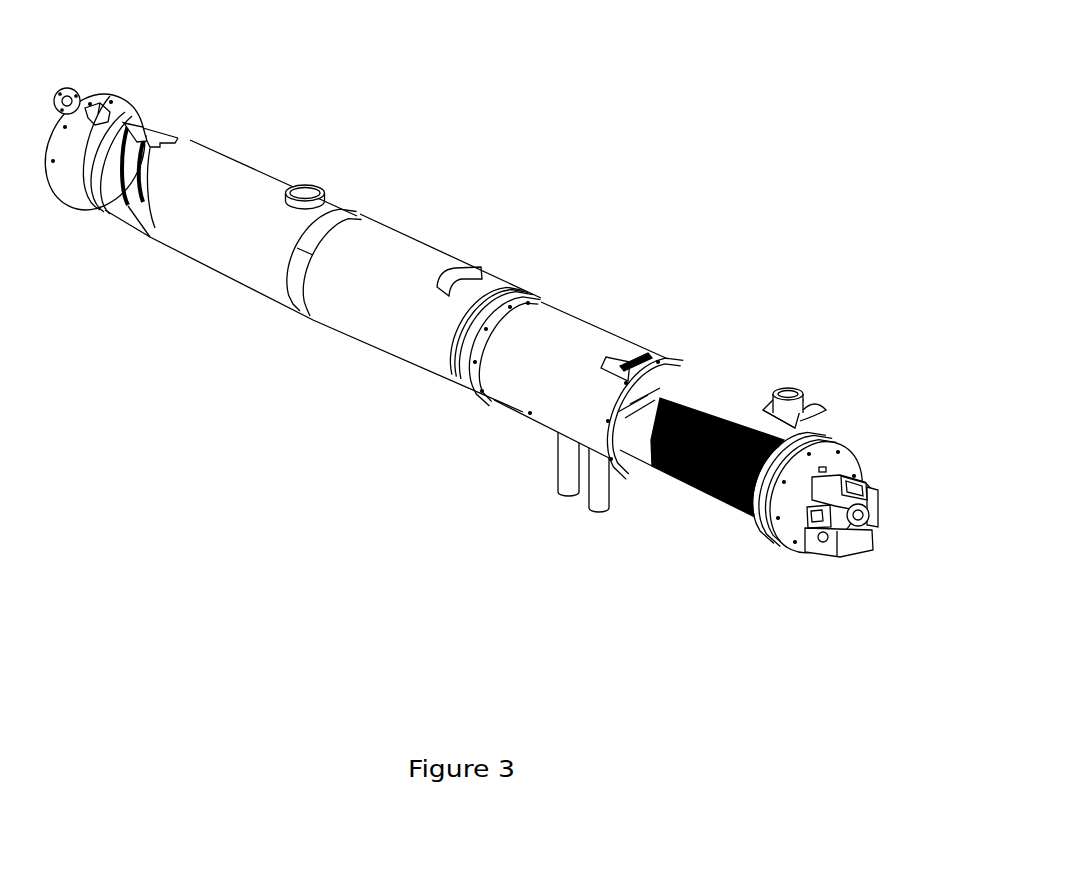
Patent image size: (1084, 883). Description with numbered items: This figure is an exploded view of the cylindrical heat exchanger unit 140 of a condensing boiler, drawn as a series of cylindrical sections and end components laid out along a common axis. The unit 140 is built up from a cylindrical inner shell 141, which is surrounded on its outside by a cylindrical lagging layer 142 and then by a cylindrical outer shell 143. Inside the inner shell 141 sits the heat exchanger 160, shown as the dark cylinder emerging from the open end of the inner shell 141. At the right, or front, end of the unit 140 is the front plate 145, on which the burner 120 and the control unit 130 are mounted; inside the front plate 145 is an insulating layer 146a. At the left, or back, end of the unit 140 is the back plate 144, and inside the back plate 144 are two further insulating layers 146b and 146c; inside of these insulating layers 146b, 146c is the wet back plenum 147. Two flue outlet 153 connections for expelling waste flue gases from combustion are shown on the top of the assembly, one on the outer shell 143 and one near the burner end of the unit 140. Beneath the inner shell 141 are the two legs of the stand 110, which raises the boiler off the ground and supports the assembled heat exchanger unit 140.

The stand 110 is at (568, 473).
The burner 120 is at (878, 527).
The control unit 130 is at (868, 488).
The cylindrical heat exchanger unit 140 is at (556, 72).
The cylindrical inner shell 141 is at (553, 311).
The cylindrical lagging layer 142 is at (440, 251).
The cylindrical outer shell 143 is at (277, 173).
The back plate 144 is at (61, 200).
The front plate 145 is at (790, 547).
The insulating layer 146a is at (772, 522).
The insulating layer 146b is at (92, 203).
The insulating layer 146c is at (122, 220).
The wet back plenum 147 is at (178, 138).
The flue outlet 153 is at (312, 190).
The heat exchanger 160 is at (693, 484).